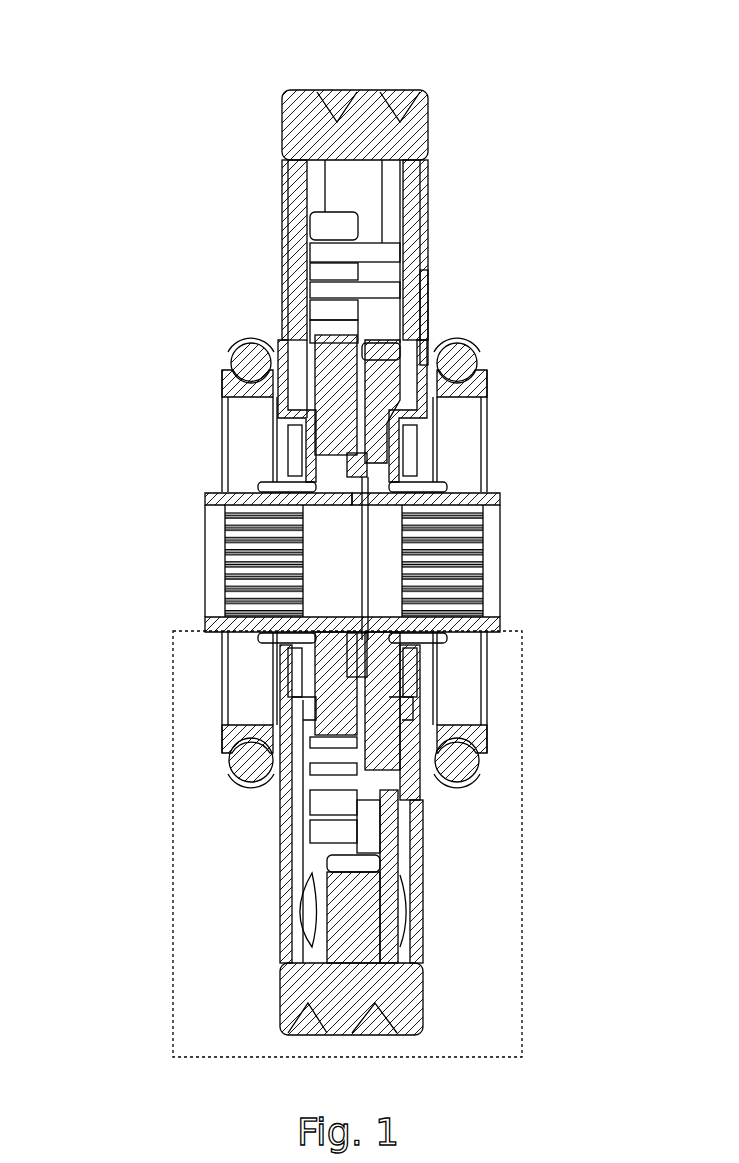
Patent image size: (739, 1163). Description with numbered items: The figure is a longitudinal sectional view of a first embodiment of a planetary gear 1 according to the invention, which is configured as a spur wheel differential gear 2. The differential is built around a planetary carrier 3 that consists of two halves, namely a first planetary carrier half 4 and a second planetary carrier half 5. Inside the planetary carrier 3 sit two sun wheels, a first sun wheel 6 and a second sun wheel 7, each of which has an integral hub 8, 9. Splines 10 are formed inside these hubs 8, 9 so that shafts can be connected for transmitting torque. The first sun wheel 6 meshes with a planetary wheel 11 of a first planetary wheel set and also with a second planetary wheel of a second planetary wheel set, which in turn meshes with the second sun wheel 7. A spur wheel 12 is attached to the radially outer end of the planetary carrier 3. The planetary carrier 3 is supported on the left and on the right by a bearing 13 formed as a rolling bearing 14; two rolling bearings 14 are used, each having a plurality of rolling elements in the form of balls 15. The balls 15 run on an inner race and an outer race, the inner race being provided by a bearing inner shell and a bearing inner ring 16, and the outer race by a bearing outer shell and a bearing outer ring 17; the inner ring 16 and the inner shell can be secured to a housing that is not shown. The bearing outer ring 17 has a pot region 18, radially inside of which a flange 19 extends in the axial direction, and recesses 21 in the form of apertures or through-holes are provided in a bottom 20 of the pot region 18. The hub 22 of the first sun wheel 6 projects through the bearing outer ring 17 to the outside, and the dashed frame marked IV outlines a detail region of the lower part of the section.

The planetary gear 1 is at (483, 232).
The spur wheel differential gear 2 is at (335, 521).
The planetary carrier 3 is at (353, 231).
The first planetary carrier half 4 is at (285, 178).
The second planetary carrier half 5 is at (415, 200).
The first sun wheel 6 is at (290, 333).
The second sun wheel 7 is at (428, 340).
The hub 8 is at (242, 498).
The hub 9 is at (462, 491).
The splines 10 is at (232, 552).
The planetary wheel 11 is at (325, 313).
The spur wheel 12 is at (355, 130).
The bearing 13 is at (222, 343).
The rolling bearing 14 is at (478, 333).
The balls 15 is at (240, 367).
The bearing inner ring 16 is at (236, 397).
The bearing outer ring 17 is at (238, 345).
The pot region 18 is at (272, 465).
The flange 19 is at (270, 482).
The bottom 20 is at (433, 437).
The recesses 21 is at (438, 445).
The hub 22 is at (240, 622).
The detail region IV is at (522, 812).